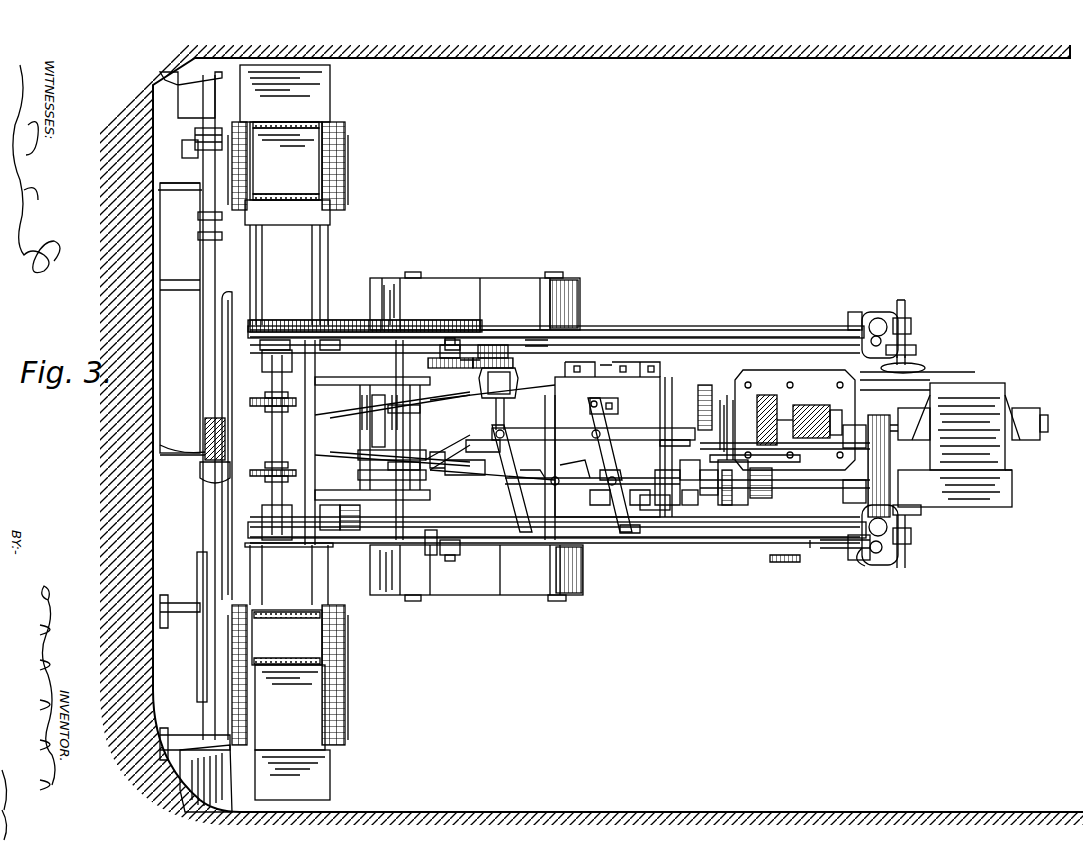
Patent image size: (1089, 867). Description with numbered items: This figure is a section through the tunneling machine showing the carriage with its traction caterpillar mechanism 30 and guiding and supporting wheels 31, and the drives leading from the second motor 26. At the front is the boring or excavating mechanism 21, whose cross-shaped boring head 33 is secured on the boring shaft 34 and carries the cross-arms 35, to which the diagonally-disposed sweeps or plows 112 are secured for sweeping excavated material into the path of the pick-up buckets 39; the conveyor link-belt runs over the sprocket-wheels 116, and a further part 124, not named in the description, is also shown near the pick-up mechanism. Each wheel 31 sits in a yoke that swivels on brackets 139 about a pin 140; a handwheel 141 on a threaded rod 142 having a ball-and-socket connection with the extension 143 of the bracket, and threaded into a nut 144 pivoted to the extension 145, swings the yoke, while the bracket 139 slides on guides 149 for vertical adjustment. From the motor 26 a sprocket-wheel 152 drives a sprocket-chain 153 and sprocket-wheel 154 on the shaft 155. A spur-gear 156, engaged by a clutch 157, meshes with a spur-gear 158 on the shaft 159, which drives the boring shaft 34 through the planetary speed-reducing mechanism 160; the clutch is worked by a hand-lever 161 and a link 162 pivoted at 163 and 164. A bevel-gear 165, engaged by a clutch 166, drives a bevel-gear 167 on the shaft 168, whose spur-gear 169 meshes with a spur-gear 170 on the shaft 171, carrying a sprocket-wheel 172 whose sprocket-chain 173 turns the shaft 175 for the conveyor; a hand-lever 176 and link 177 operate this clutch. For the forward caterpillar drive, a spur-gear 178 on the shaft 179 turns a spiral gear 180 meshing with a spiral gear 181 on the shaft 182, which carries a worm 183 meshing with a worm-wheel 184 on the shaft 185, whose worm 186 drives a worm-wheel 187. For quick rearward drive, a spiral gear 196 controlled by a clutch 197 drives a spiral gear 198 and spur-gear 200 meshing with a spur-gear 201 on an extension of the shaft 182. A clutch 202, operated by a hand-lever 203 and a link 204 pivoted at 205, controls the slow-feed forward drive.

The boring or excavating mechanism 21 is at (190, 310).
The second motor 26 is at (998, 382).
The traction caterpillar mechanism 30 is at (432, 270).
The guiding and supporting wheels 31 is at (862, 562).
The boring head 33 is at (225, 490).
The boring shaft 34 is at (430, 442).
The cross-arms 35 is at (280, 108).
The pick-up buckets 39 is at (288, 755).
The sweeps or plows 112 is at (191, 406).
The sprocket-wheels 116 is at (268, 470).
The upper wheel support 124 is at (286, 312).
The brackets 139 is at (885, 565).
The pin 140 is at (878, 562).
The handwheel 141 is at (915, 366).
The threaded rod or shaft 142 is at (905, 318).
The extension of the bracket 143 is at (910, 362).
The nut 144 is at (905, 345).
The extension of the bracket 145 is at (900, 300).
The guides 149 is at (862, 542).
The sprocket-wheel 152 is at (930, 434).
The sprocket-chain 153 is at (890, 456).
The sprocket-wheel 154 is at (892, 495).
The shaft 155 is at (805, 538).
The spur-gear 156 is at (690, 505).
The clutch 157 is at (727, 505).
The spur-gear 158 is at (740, 372).
The shaft 159 is at (705, 385).
The planetary speed-reducing mechanism 160 is at (602, 451).
The hand-lever 161 is at (445, 452).
The link 162 is at (606, 482).
The pivotal connection 163 is at (445, 561).
The pivotal connection 164 is at (742, 505).
The bevel-gear 165 is at (430, 558).
The clutch 166 is at (515, 460).
The bevel-gear 167 is at (593, 432).
The shaft 168 is at (514, 399).
The spur-gear 169 is at (540, 345).
The spur-gear 170 is at (495, 355).
The shaft 171 is at (470, 358).
The sprocket-wheel 172 is at (448, 338).
The sprocket-chain 173 is at (338, 325).
The shaft 175 is at (276, 381).
The hand-lever 176 is at (620, 465).
The link 177 is at (592, 469).
The spur-gear 178 is at (760, 398).
The shaft 179 is at (655, 510).
The spiral gear 180 is at (835, 410).
The spiral gear 181 is at (862, 320).
The shaft 182 is at (785, 418).
The worm 183 is at (770, 395).
The worm-wheel 184 is at (758, 498).
The shaft 185 is at (808, 405).
The worm 186 is at (854, 330).
The worm-wheel 187 is at (990, 350).
The spiral gear 196 is at (892, 478).
The clutch 197 is at (930, 446).
The spiral gear 198 is at (930, 420).
The spur-gear 200 is at (928, 400).
The spur-gear 201 is at (920, 395).
The clutch 202 is at (950, 385).
The hand-lever 203 is at (632, 540).
The link 204 is at (668, 378).
The pivotal connection 205 is at (600, 398).